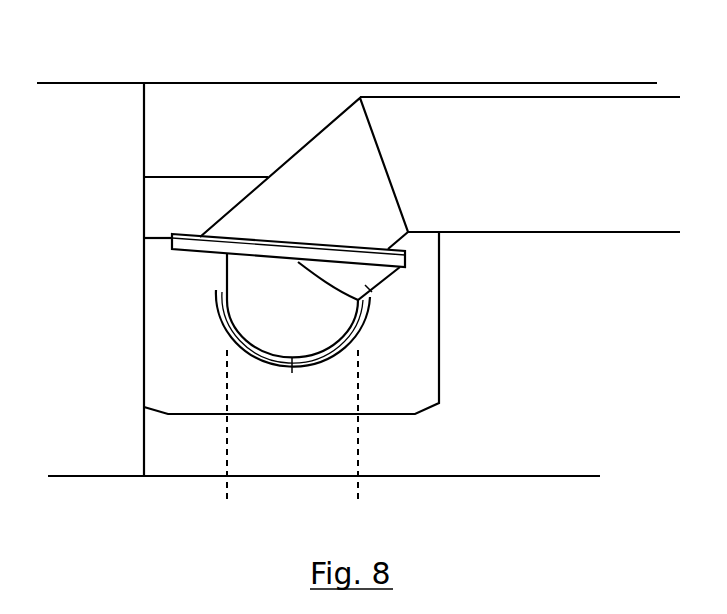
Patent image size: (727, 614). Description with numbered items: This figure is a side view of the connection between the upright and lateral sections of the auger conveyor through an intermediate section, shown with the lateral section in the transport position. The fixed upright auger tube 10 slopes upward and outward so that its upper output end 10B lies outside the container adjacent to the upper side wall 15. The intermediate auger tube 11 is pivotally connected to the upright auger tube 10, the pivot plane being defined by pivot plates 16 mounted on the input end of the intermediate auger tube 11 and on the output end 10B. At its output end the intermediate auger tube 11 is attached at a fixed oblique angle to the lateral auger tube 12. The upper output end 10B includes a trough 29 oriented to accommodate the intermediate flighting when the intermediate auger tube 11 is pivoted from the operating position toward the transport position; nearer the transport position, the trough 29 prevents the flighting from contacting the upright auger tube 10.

The upper side wall 15 is at (252, 100).
The lateral auger tube 12 is at (486, 97).
The intermediate auger tube 11 is at (286, 158).
The pivot plates 16 is at (407, 258).
The upper output end 10B is at (235, 268).
The upright auger tube 10 is at (228, 442).
The trough 29 is at (366, 286).